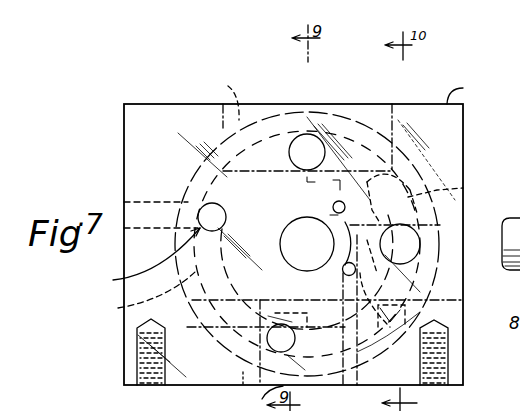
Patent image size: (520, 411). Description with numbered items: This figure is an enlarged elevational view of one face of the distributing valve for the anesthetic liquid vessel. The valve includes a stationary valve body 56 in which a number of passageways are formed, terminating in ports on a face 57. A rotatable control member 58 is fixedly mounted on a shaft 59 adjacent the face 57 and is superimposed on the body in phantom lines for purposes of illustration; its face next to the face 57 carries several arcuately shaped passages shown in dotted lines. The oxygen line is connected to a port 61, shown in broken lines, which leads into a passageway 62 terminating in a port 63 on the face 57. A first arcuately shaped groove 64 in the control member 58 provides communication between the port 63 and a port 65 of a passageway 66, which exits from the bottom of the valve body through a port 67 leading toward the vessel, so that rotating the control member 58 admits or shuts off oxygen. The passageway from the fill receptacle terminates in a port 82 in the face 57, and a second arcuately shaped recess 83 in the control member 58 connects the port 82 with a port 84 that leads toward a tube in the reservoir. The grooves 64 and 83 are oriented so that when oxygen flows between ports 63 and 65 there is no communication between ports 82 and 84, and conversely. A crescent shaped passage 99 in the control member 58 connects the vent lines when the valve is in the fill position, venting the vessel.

The stationary valve body 56 is at (467, 93).
The face 57 is at (137, 117).
The rotatable control member 58 is at (217, 99).
The shaft 59 is at (508, 263).
The port 61 is at (124, 221).
The passageway 62 is at (148, 202).
The port 63 is at (142, 262).
The first arcuately shaped groove 64 is at (118, 308).
The port 65 is at (295, 338).
The passageway 66 is at (243, 385).
The port 67 is at (266, 398).
The port 82 is at (300, 145).
The second arcuately shaped recess 83 is at (463, 188).
The port 84 is at (418, 236).
The crescent shaped passage 99 is at (343, 271).